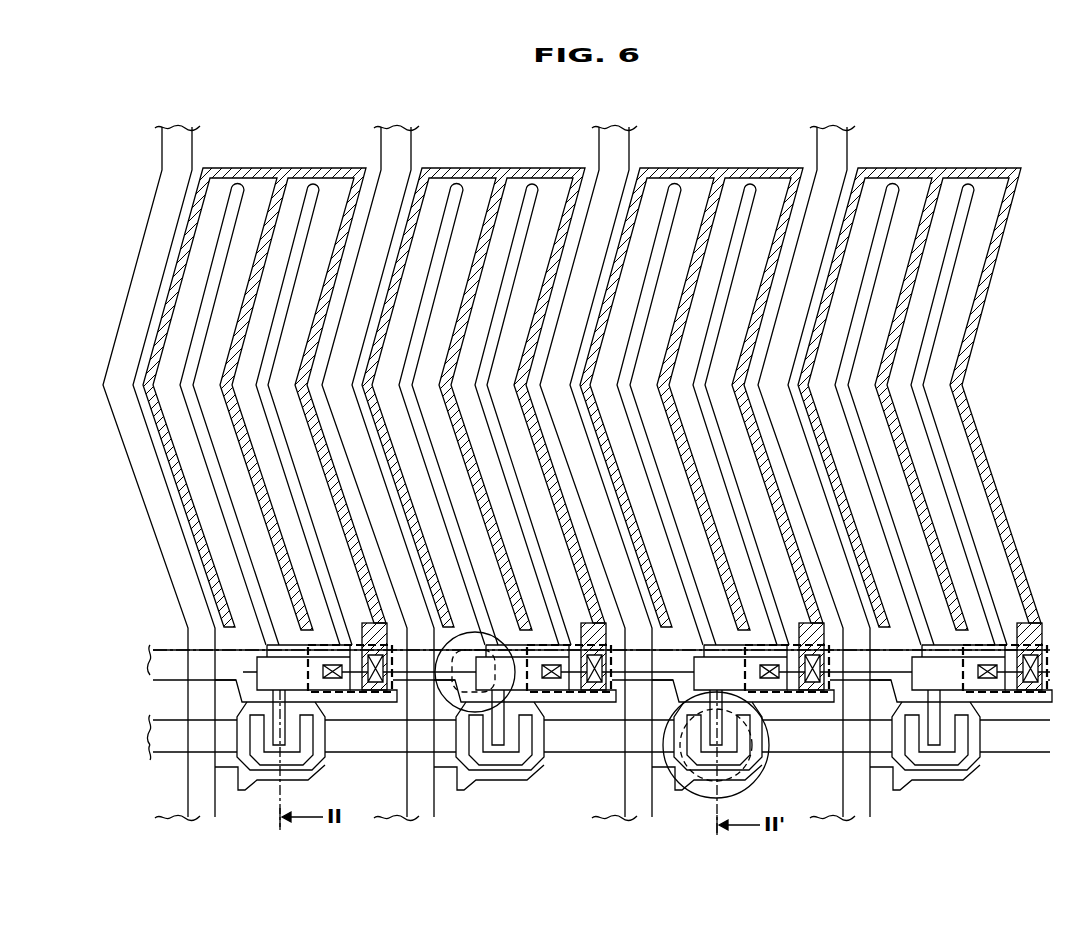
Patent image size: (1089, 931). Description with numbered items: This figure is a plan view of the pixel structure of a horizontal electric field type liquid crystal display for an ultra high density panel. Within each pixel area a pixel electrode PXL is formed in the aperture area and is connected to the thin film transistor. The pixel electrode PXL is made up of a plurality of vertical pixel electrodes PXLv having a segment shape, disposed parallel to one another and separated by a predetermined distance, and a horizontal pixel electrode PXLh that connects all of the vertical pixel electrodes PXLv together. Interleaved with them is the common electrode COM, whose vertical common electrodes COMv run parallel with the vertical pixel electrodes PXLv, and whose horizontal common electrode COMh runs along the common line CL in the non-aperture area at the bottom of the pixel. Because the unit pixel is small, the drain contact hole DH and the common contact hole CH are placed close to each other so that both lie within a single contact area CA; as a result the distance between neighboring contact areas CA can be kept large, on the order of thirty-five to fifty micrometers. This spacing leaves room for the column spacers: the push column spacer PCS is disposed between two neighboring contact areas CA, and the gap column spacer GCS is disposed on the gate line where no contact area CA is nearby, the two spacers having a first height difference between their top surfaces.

The common line CL is at (165, 658).
The contact area CA is at (366, 642).
The common contact hole CH is at (375, 691).
The drain contact hole DH is at (332, 679).
The push column spacer PCS is at (506, 693).
The gap column spacer GCS is at (694, 797).
The pixel electrode PXL is at (615, 528).
The vertical pixel electrode PXLv is at (934, 337).
The horizontal pixel electrode PXLh is at (908, 692).
The common electrode COM is at (596, 399).
The vertical common electrode COMv is at (966, 406).
The horizontal common electrode COMh is at (925, 692).